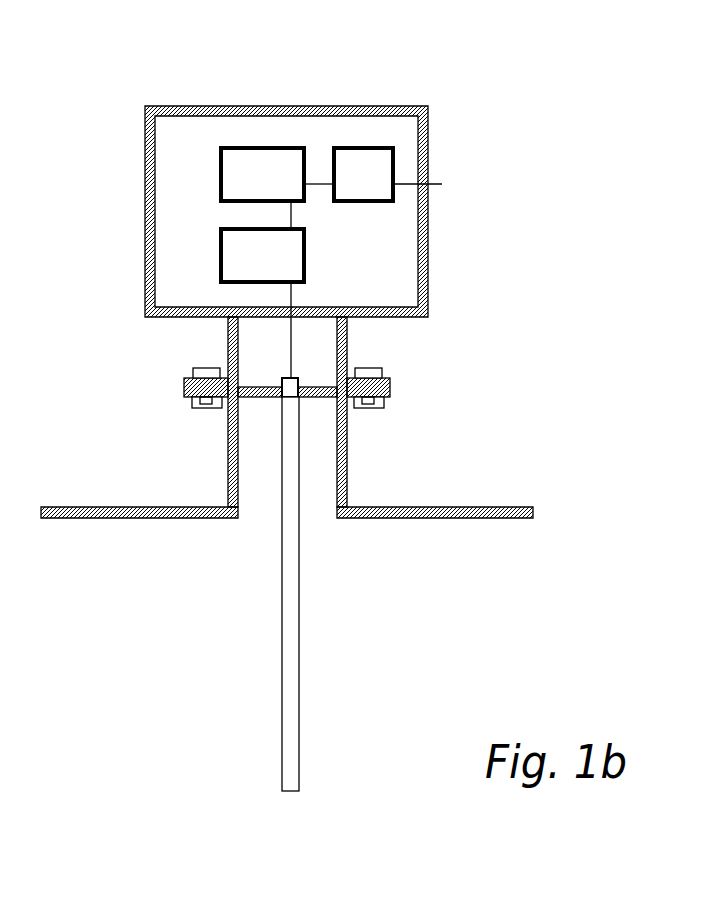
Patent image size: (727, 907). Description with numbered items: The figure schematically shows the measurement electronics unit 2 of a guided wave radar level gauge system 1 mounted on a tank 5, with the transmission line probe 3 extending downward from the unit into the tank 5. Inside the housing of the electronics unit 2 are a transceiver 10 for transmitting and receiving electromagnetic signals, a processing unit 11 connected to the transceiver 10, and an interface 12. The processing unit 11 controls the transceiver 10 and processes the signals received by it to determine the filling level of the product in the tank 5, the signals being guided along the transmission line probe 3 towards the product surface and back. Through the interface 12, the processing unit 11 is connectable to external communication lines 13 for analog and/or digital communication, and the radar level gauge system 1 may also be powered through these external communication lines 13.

The radar level gauge system 1 is at (418, 60).
The measurement electronics unit 2 is at (205, 106).
The transmission line probe 3 is at (292, 630).
The tank 5 is at (459, 507).
The transceiver 10 is at (306, 254).
The processing unit 11 is at (219, 178).
The interface 12 is at (366, 146).
The external communication lines 13 is at (432, 186).